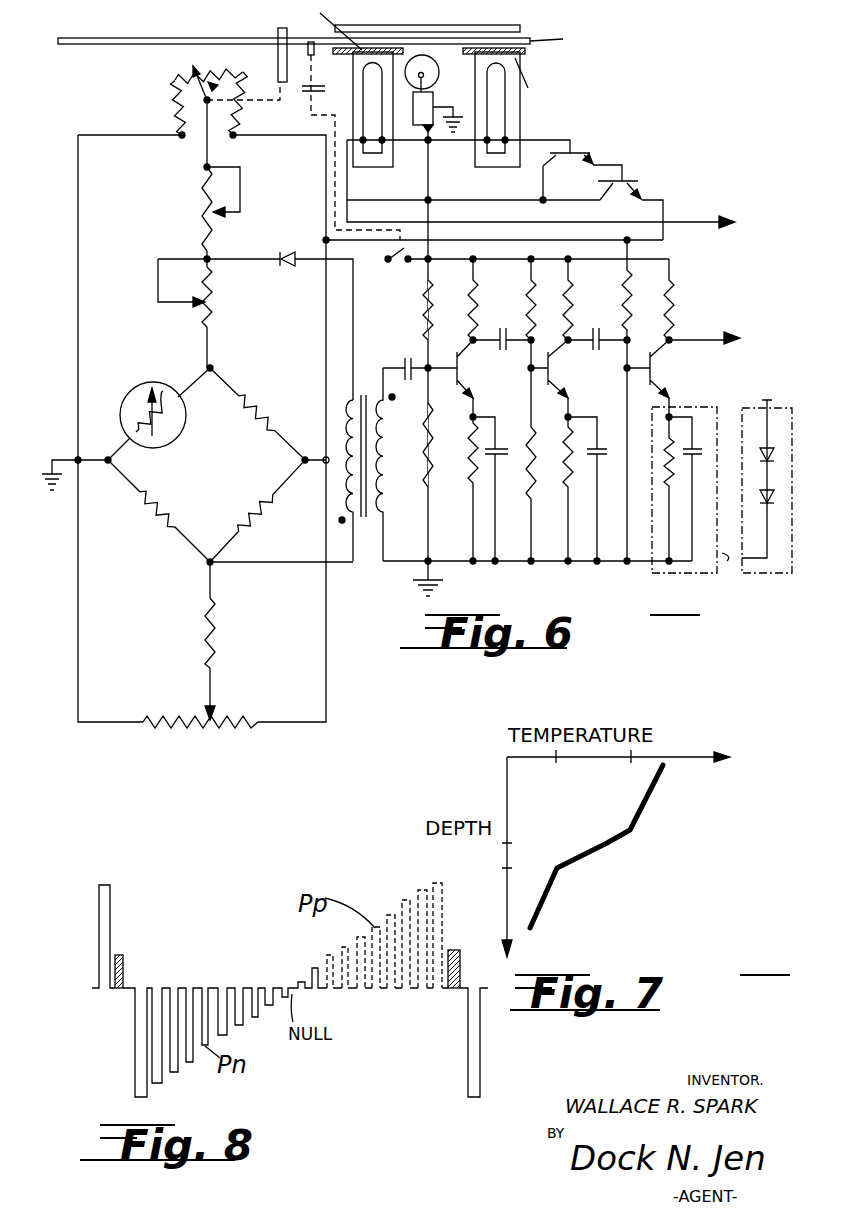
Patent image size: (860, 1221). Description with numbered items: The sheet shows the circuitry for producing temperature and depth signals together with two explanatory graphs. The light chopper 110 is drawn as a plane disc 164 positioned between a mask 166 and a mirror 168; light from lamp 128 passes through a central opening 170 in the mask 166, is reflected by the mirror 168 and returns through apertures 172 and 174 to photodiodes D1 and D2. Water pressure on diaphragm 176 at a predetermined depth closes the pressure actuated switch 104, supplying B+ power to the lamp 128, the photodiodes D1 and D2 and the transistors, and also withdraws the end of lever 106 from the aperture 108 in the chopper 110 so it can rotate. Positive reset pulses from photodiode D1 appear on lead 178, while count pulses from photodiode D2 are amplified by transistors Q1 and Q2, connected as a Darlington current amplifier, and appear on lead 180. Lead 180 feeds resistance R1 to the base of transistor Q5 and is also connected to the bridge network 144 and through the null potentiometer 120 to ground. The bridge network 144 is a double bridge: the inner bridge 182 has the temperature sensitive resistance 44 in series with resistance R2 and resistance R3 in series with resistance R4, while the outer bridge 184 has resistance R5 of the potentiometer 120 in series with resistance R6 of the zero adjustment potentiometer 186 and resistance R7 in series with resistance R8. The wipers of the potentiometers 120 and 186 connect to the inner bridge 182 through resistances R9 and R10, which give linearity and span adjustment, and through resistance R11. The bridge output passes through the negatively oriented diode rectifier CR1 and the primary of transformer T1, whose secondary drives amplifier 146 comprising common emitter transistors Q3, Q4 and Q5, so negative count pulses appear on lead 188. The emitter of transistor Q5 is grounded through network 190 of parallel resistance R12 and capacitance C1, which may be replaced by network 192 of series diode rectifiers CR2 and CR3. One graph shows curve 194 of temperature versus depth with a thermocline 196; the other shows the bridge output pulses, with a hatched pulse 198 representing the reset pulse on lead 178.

In FIG. 6, the plane disc 164 is at (113, 38).
In FIG. 6, the mirror 168 is at (520, 28).
In FIG. 6, the light chopper 110 is at (636, 41).
In FIG. 6, the mask 166 is at (525, 52).
In FIG. 6, the aperture 172 is at (327, 31).
In FIG. 6, the aperture 174 is at (538, 82).
In FIG. 6, the aperture in the light chopper 108 is at (280, 30).
In FIG. 6, the lever 106 is at (313, 58).
In FIG. 6, the diaphragm 176 is at (305, 95).
In FIG. 6, the null potentiometer 120 is at (185, 95).
In FIG. 6, the bridge network 144 is at (197, 447).
In FIG. 6, the inner bridge 182 is at (185, 463).
In FIG. 6, the outer bridge 184 is at (209, 641).
In FIG. 6, the zero adjustment potentiometer 186 is at (188, 715).
In FIG. 6, the temperature sensitive resistance 44 is at (147, 404).
In FIG. 6, the central opening 170 is at (438, 62).
In FIG. 6, the lamp 128 is at (436, 92).
In FIG. 6, the lead 178 is at (712, 218).
In FIG. 6, the lead 180 is at (658, 240).
In FIG. 6, the pressure actuated switch 104 is at (404, 250).
In FIG. 6, the amplifier 146 is at (605, 420).
In FIG. 6, the lead 188 is at (716, 334).
In FIG. 6, the emitter network 190 is at (658, 504).
In FIG. 6, the alternate emitter network 192 is at (774, 500).
In FIG. 7, the curve 194 is at (652, 793).
In FIG. 7, the thermocline 196 is at (607, 843).
In FIG. 8, the hatched pulse 198 is at (124, 965).
In FIG. 6, the resistance R1 is at (609, 400).
In FIG. 6, the resistance R2 is at (158, 510).
In FIG. 6, the resistance R3 is at (258, 413).
In FIG. 6, the resistance R4 is at (257, 511).
In FIG. 6, the resistance R5 is at (187, 72).
In FIG. 6, the resistance R6 is at (200, 737).
In FIG. 6, the resistance R7 is at (249, 95).
In FIG. 6, the resistance R8 is at (240, 748).
In FIG. 6, the resistance R9 is at (236, 207).
In FIG. 6, the resistance R10 is at (170, 291).
In FIG. 6, the resistance R11 is at (236, 633).
In FIG. 6, the resistance R12 is at (670, 485).
In FIG. 6, the capacitance C1 is at (693, 489).
In FIG. 6, the diode rectifier CR1 is at (280, 326).
In FIG. 6, the diode rectifier CR2 is at (775, 466).
In FIG. 6, the diode rectifier CR3 is at (775, 505).
In FIG. 6, the photodiode D1 is at (373, 122).
In FIG. 6, the photodiode D2 is at (497, 122).
In FIG. 6, the transformer T1 is at (364, 395).
In FIG. 6, the transistor Q1 is at (582, 166).
In FIG. 6, the transistor Q2 is at (634, 204).
In FIG. 6, the transistor Q3 is at (464, 378).
In FIG. 6, the transistor Q4 is at (560, 378).
In FIG. 6, the transistor Q5 is at (658, 378).